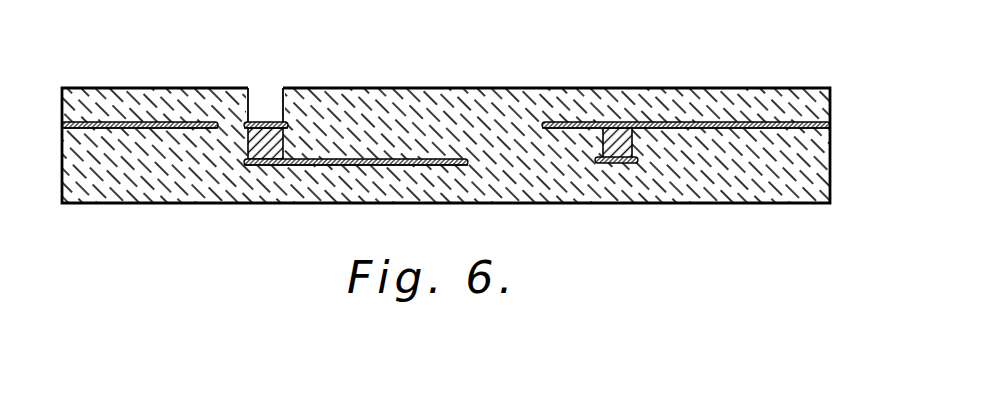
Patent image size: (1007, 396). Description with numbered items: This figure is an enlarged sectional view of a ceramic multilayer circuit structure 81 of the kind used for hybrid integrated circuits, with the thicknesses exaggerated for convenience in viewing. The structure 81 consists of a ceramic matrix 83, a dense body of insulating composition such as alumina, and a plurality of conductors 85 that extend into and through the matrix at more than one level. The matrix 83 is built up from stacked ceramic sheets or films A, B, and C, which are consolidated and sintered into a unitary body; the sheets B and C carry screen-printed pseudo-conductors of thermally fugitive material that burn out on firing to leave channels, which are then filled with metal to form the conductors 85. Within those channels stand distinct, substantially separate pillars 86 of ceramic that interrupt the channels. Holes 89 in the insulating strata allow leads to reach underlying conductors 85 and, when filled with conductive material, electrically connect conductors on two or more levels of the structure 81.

The multilayer circuit structure 81 is at (480, 165).
The ceramic matrix 83 is at (480, 118).
The conductors 85 is at (295, 127).
The pillars 86 is at (88, 127).
The holes 89 is at (279, 99).
The sheet or film A is at (831, 100).
The sheet or film B is at (831, 122).
The sheet or film C is at (831, 155).